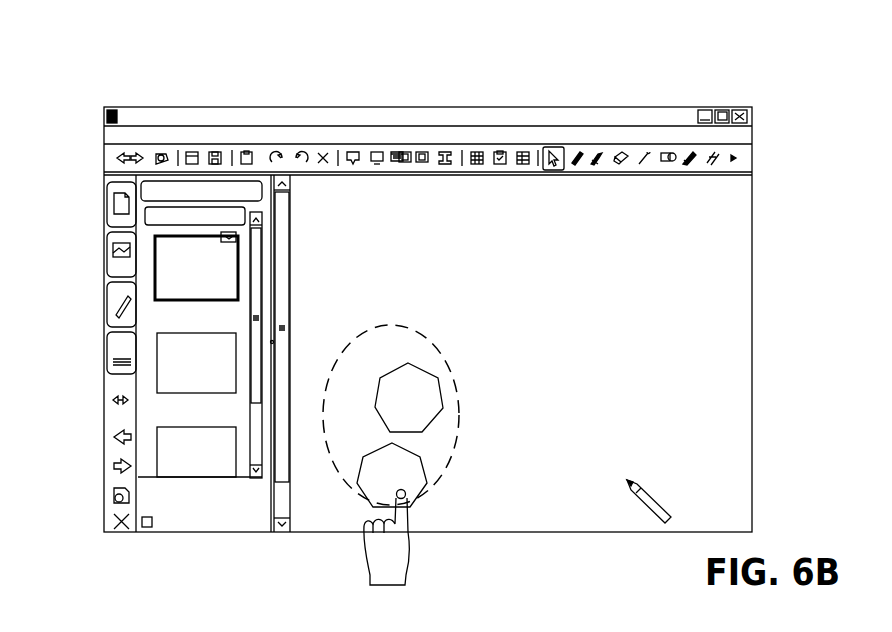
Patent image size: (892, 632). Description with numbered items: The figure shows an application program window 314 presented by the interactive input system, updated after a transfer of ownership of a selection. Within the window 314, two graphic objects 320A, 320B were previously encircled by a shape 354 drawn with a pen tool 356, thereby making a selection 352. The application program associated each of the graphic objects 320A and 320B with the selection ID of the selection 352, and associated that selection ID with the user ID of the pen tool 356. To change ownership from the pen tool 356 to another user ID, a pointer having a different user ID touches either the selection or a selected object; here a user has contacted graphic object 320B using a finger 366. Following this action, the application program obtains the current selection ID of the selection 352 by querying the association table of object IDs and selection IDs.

The application program window 314 is at (108, 73).
The selection 352 is at (464, 319).
The graphic object 320A is at (442, 392).
The graphic object 320B is at (422, 463).
The shape 354 is at (347, 497).
The finger 366 is at (405, 498).
The pen tool 356 is at (648, 503).